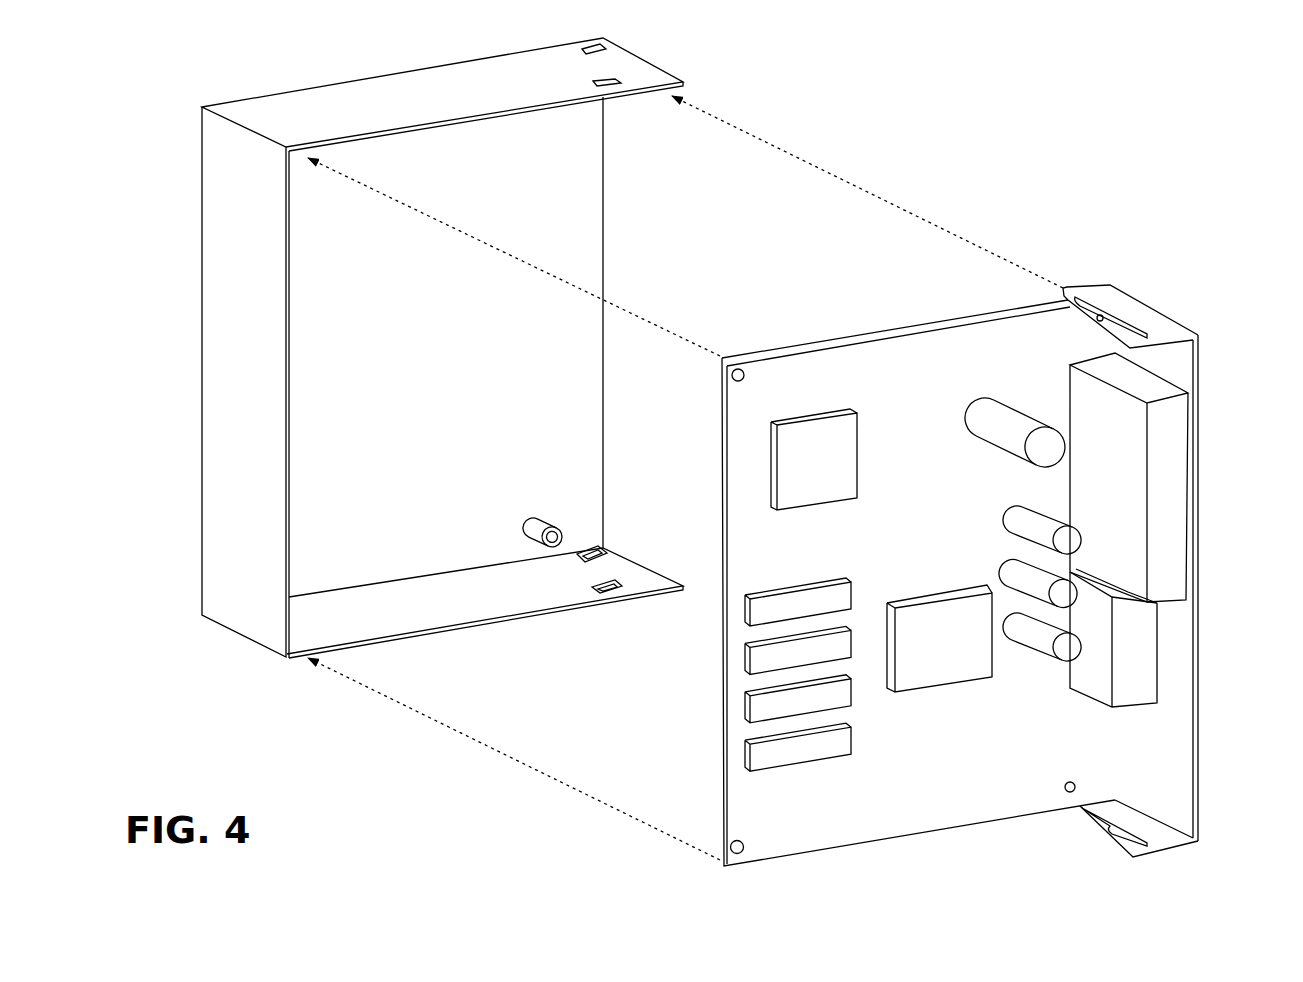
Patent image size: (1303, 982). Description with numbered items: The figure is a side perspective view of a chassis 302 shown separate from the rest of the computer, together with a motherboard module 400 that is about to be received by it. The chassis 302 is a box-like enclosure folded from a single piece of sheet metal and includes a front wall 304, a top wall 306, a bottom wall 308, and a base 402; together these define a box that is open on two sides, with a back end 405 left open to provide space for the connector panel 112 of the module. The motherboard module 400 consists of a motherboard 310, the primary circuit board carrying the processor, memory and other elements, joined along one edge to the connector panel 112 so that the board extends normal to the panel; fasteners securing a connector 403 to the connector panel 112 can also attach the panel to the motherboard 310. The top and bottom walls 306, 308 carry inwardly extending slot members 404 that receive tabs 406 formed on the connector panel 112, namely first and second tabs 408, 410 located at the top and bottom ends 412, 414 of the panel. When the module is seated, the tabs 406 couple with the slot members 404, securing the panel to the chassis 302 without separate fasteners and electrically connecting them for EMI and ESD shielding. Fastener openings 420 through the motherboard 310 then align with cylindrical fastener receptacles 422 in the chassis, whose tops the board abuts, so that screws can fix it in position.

The chassis 302 is at (148, 125).
The front wall 304 is at (202, 360).
The top wall 306 is at (362, 87).
The bottom wall 308 is at (425, 578).
The motherboard 310 is at (958, 533).
The motherboard module 400 is at (1217, 222).
The base 402 is at (460, 344).
The connector 403 is at (1095, 672).
The slot members 404 is at (617, 120).
The back end 405 is at (672, 258).
The tabs 406 is at (1020, 340).
The first tabs 408 is at (1108, 323).
The second tabs 410 is at (1070, 290).
The top end 412 is at (1192, 283).
The bottom end 414 is at (1185, 868).
The fastener openings 420 is at (735, 380).
The fastener receptacles 422 is at (515, 522).
The connector panel 112 is at (1197, 790).